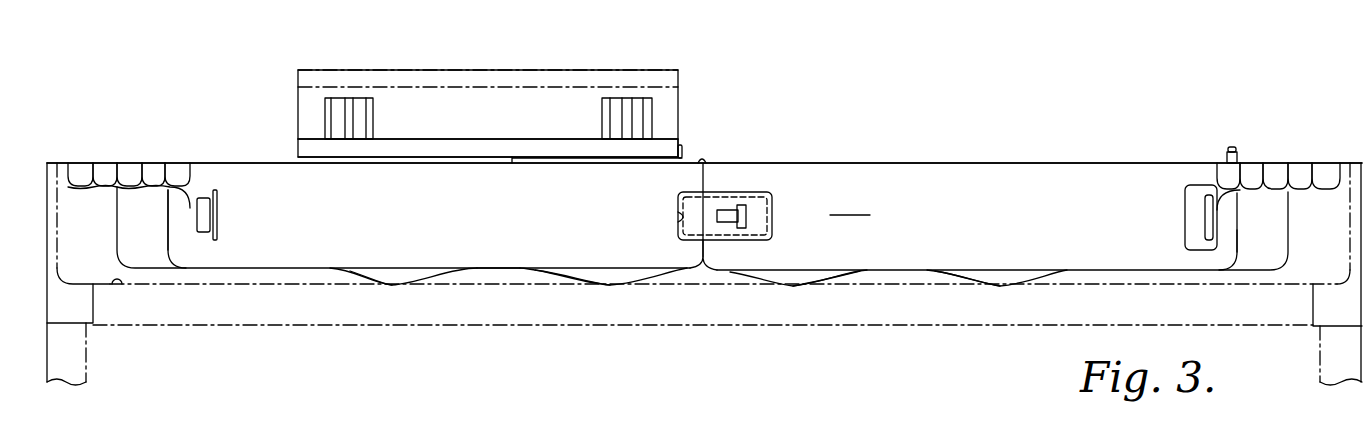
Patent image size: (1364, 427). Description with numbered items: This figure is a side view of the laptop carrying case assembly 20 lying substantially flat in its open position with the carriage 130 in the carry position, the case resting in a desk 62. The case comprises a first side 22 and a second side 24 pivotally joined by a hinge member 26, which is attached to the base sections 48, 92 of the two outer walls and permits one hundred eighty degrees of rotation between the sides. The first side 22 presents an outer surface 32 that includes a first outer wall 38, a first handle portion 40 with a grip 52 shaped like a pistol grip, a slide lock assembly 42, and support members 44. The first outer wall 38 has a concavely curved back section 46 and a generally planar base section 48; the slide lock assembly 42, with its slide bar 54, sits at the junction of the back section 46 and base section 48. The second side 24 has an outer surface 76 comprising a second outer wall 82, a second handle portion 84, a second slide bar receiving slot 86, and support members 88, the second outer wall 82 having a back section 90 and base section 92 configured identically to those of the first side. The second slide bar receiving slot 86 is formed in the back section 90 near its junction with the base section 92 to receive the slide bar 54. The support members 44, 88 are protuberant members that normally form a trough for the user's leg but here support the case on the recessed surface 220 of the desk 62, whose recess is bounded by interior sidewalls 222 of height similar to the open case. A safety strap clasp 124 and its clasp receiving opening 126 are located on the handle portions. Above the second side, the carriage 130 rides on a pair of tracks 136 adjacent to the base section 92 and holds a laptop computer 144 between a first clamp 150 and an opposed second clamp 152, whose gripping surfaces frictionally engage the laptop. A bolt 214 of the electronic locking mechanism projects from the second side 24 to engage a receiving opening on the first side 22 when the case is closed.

The laptop carrying case assembly 20 is at (1033, 128).
The first side 22 is at (1092, 175).
The second side 24 is at (250, 258).
The hinge member 26 is at (703, 162).
The outer surface 32 is at (1155, 257).
The first outer wall 38 is at (1040, 208).
The first handle portion 40 is at (1325, 173).
The slide lock assembly 42 is at (846, 214).
The support members 44 is at (793, 275).
The back section 46 is at (895, 175).
The base section 48 is at (705, 250).
The grip 52 is at (1270, 175).
The slide bar 54 is at (745, 212).
The desk 62 is at (693, 318).
The outer surface 76 is at (268, 170).
The second outer wall 82 is at (437, 208).
The second handle portion 84 is at (105, 173).
The second slide bar receiving slot 86 is at (678, 222).
The support members 88 is at (398, 278).
The back section 90 is at (508, 248).
The base section 92 is at (702, 177).
The clasp 124 is at (1210, 213).
The clasp receiving opening 126 is at (217, 212).
The carriage 130 is at (665, 145).
The tracks 136 is at (528, 163).
The laptop computer 144 is at (490, 80).
The first clamp 150 is at (343, 112).
The second clamp 152 is at (632, 112).
The bolt 214 is at (1230, 147).
The recessed surface 220 is at (122, 284).
The interior sidewalls 222 is at (58, 178).